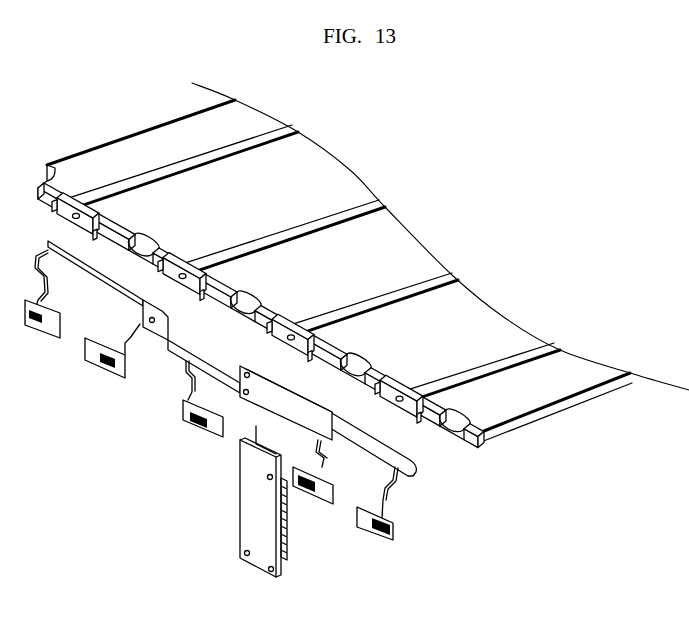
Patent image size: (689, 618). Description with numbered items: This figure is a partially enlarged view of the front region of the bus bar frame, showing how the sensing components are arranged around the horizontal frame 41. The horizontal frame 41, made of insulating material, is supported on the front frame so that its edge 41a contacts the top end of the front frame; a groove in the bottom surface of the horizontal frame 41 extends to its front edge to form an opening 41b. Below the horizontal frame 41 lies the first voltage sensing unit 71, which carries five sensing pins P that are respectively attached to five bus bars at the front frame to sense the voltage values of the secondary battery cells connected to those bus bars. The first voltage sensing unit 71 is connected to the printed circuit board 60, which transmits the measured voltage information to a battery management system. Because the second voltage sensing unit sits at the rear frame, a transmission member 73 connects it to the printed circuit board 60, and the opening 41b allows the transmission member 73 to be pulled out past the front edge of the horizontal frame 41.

The horizontal frame 41 is at (473, 323).
The edge of the horizontal frame 41a is at (268, 320).
The opening 41b is at (297, 340).
The transmission member 73 is at (278, 370).
The first voltage sensing unit 71 is at (165, 373).
The printed circuit board 60 is at (253, 508).
The sensing pins P is at (52, 330).